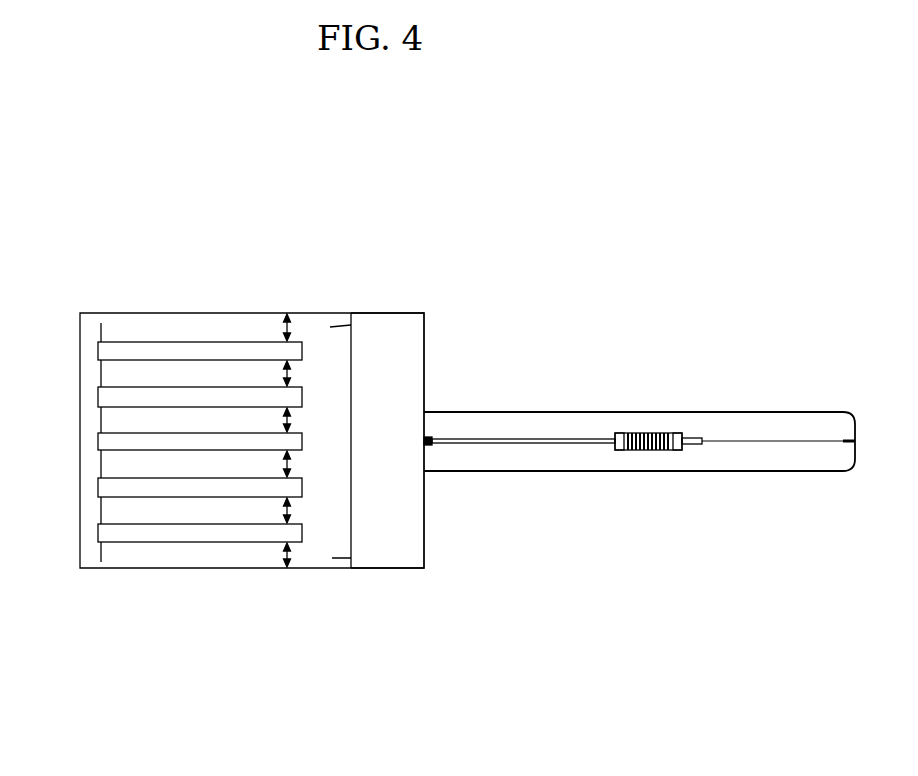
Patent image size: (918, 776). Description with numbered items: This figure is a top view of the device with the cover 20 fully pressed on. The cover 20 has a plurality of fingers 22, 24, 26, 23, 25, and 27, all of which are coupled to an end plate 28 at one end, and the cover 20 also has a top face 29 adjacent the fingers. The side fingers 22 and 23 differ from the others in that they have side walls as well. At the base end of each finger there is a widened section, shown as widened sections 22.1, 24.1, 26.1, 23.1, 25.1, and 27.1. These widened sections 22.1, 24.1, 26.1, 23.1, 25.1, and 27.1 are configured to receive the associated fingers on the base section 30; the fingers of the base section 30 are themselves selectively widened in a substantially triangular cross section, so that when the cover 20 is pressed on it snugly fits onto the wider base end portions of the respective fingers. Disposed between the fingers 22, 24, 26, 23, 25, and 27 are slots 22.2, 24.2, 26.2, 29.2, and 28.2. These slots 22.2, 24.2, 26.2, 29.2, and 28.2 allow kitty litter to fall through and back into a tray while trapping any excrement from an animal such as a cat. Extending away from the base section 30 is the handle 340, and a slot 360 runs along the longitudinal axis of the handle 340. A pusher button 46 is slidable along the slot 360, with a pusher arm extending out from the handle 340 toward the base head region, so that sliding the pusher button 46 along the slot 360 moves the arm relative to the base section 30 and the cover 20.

The cover 20 is at (424, 268).
The side finger 22 is at (117, 325).
The widened section 22.1 is at (277, 324).
The slot 22.2 is at (176, 344).
The side finger 23 is at (113, 557).
The widened section 23.1 is at (287, 572).
The finger 24 is at (118, 373).
The widened section 24.1 is at (300, 372).
The slot 24.2 is at (202, 393).
The finger 25 is at (113, 510).
The widened section 25.1 is at (293, 514).
The finger 26 is at (118, 427).
The widened section 26.1 is at (300, 406).
The slot 26.2 is at (223, 437).
The finger 27 is at (113, 462).
The widened section 27.1 is at (293, 469).
The end plate 28 is at (83, 533).
The slot 28.2 is at (155, 488).
The top face 29 is at (400, 319).
The slot 29.2 is at (213, 533).
The base section 30 is at (550, 360).
The pusher button 46 is at (655, 433).
The handle 340 is at (757, 420).
The slot 360 is at (522, 443).